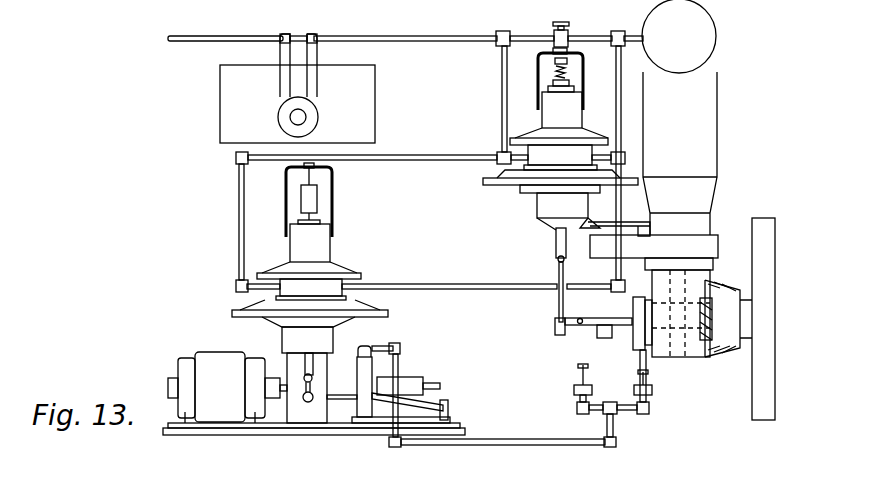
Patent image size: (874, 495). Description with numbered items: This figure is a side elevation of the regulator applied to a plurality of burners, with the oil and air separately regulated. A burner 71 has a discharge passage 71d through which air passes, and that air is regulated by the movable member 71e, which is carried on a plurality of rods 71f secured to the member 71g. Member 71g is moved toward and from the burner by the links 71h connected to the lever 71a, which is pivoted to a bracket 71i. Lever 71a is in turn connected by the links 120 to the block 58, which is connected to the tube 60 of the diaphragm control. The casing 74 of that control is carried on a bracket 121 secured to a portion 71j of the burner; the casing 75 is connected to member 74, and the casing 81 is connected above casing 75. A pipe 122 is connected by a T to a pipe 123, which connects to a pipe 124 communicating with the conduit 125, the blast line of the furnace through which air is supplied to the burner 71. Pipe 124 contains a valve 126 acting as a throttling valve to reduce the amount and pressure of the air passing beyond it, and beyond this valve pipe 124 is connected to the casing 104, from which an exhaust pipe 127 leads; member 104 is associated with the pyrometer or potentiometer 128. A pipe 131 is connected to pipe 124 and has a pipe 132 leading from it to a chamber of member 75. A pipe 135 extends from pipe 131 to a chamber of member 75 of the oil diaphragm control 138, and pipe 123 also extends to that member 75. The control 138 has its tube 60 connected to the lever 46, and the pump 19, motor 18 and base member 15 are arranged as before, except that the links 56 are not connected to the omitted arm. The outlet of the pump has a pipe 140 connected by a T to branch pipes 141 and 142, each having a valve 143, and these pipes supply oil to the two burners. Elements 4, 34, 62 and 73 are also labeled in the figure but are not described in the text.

The supply line arrow 4 is at (168, 39).
The base member 15 is at (285, 432).
The motor 18 is at (224, 352).
The pump 19 is at (355, 370).
The cylinder 34 is at (430, 386).
The lever 46 is at (340, 395).
The links 56 is at (305, 400).
The block 58 is at (556, 259).
The tube 60 is at (556, 246).
The lever 62 is at (450, 418).
The burner 71 is at (728, 262).
The lever 71a is at (595, 339).
The discharge passage 71d is at (745, 306).
The movable member 71e is at (704, 357).
The rods 71f is at (650, 303).
The member 71g is at (634, 328).
The links 71h is at (572, 302).
The bracket 71i is at (603, 340).
The portion of burner 71j is at (706, 235).
The column 73 is at (290, 368).
The casing 74 is at (540, 210).
The casing 75 is at (483, 181).
The casing 81 is at (585, 132).
The casing 104 is at (318, 111).
The links 120 is at (558, 300).
The bracket 121 is at (574, 236).
The pipe 122 is at (616, 168).
The pipe 123 is at (621, 89).
The pipe 124 is at (445, 36).
The conduit 125 is at (718, 72).
The valve 126 is at (552, 31).
The exhaust pipe 127 is at (283, 53).
The pyrometer or potentiometer 128 is at (375, 118).
The pipe 131 is at (502, 85).
The pipe 132 is at (503, 152).
The pipe 135 is at (239, 208).
The diaphragm control 138 is at (337, 256).
The pipe 140 is at (386, 345).
The branch pipe 141 is at (632, 412).
The branch pipe 142 is at (592, 413).
The valve 143 is at (587, 392).